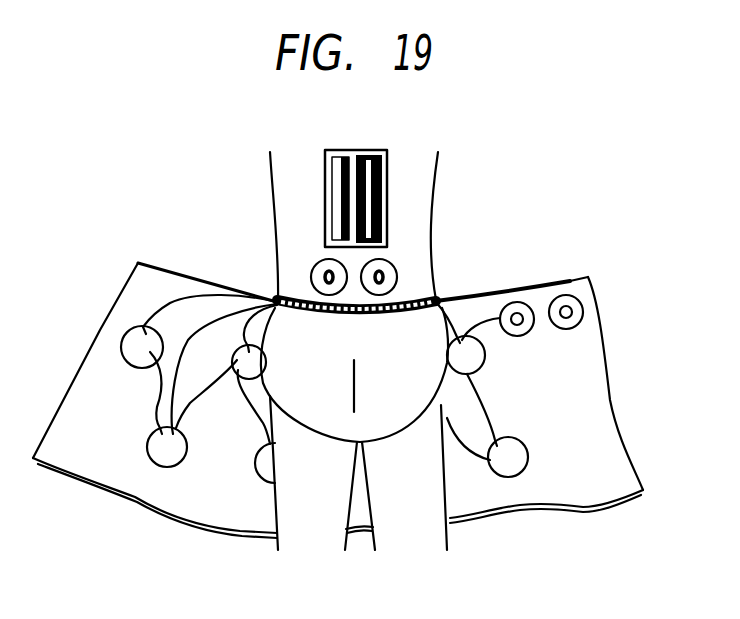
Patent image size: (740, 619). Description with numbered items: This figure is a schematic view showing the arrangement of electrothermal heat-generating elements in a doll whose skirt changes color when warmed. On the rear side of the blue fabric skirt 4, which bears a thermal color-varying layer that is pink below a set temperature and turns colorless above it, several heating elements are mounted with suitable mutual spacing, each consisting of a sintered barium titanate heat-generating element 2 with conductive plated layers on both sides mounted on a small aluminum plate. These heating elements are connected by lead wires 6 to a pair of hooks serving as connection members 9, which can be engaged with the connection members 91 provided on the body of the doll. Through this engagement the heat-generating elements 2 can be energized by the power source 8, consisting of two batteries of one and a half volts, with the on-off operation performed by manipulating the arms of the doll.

The heat-generating element 2 is at (155, 462).
The skirt 4 is at (78, 372).
The lead wire 6 is at (181, 297).
The power source 8 is at (388, 163).
The connection member 9 is at (568, 297).
The connection member 91 is at (390, 265).